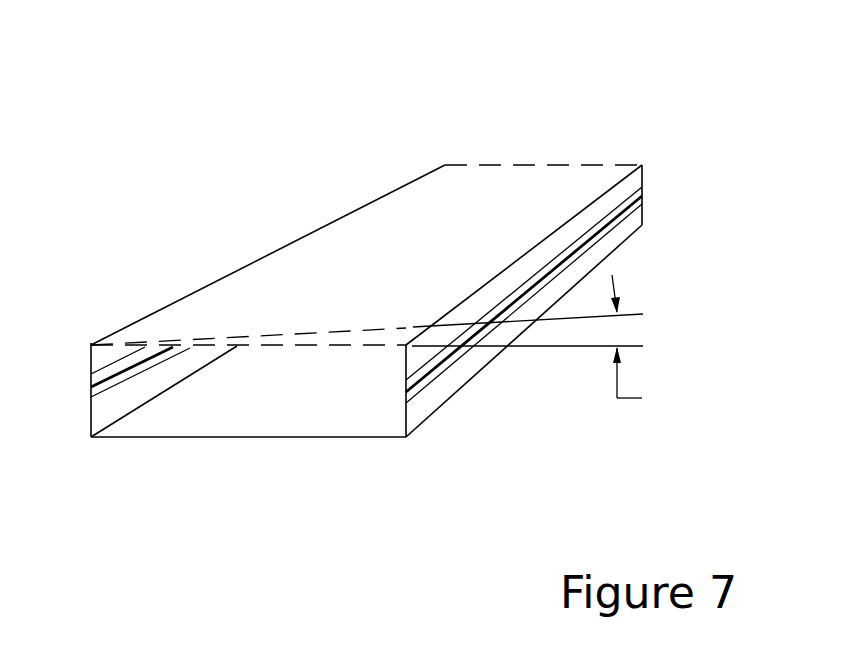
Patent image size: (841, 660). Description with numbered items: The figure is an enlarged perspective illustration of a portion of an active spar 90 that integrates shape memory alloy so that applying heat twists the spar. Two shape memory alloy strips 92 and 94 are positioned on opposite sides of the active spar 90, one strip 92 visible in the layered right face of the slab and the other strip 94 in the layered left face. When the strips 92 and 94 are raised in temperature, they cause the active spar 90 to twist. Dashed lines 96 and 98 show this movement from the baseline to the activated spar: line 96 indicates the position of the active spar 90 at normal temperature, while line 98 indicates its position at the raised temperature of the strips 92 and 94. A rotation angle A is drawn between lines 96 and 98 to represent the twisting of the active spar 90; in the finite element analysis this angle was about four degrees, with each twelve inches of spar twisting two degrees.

The active spar 90 is at (365, 266).
The shape memory alloy strip 92 is at (642, 190).
The shape memory alloy strip 94 is at (91, 391).
The dashed line 96 is at (297, 347).
The dashed line 98 is at (295, 328).